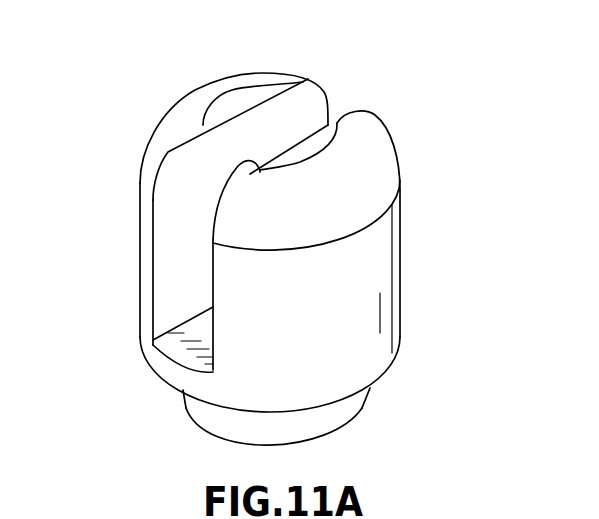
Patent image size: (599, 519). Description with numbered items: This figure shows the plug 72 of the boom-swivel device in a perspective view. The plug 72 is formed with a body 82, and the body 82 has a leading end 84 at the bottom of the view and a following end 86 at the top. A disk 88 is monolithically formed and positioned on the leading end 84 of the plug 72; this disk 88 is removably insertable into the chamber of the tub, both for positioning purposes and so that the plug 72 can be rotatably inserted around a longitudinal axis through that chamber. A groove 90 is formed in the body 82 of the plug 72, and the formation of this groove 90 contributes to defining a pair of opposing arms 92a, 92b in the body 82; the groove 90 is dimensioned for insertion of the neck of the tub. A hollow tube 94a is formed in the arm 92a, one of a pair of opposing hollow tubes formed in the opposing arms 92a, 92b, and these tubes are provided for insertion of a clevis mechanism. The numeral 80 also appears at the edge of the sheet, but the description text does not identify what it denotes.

The plug 72 is at (400, 307).
The assembly 80 is at (115, 513).
The body 82 is at (367, 373).
The leading end 84 is at (213, 433).
The following end 86 is at (232, 100).
The disk 88 is at (313, 420).
The groove 90 is at (160, 297).
The opposing arm 92a is at (228, 186).
The opposing arm 92b is at (400, 222).
The hollow tube 94a is at (165, 206).